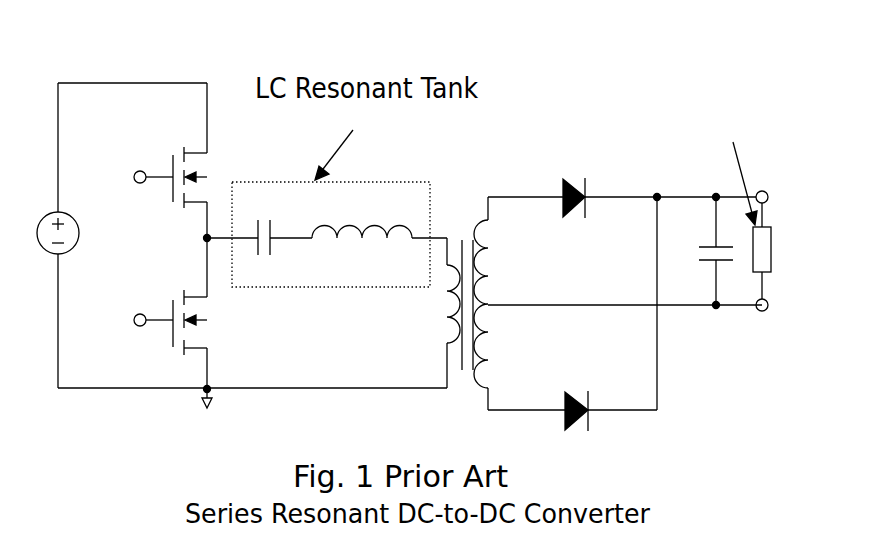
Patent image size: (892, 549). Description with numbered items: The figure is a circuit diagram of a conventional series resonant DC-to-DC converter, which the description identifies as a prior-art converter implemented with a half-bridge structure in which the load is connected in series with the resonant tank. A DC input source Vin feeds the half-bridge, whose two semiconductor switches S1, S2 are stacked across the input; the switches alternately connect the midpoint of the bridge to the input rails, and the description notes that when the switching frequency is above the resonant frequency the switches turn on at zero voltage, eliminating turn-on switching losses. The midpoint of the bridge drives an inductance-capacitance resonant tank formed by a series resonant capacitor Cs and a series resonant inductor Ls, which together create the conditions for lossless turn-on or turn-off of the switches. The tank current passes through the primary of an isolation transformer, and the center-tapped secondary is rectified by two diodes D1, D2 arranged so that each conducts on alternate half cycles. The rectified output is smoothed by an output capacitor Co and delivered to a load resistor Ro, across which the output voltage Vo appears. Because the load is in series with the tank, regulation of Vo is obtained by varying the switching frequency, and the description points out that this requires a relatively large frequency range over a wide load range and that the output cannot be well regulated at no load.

The DC input voltage source Vin is at (242, 214).
The upper switch (MOSFET) S1 is at (170, 154).
The lower switch (MOSFET) S2 is at (170, 302).
The series resonant capacitor Cs is at (259, 223).
The series resonant inductor Ls is at (379, 215).
The rectifier diode 1 D1 is at (572, 210).
The rectifier diode 2 D2 is at (572, 431).
The output filter capacitor Co is at (715, 275).
The load resistor Ro is at (744, 221).
The output voltage Vo is at (808, 192).